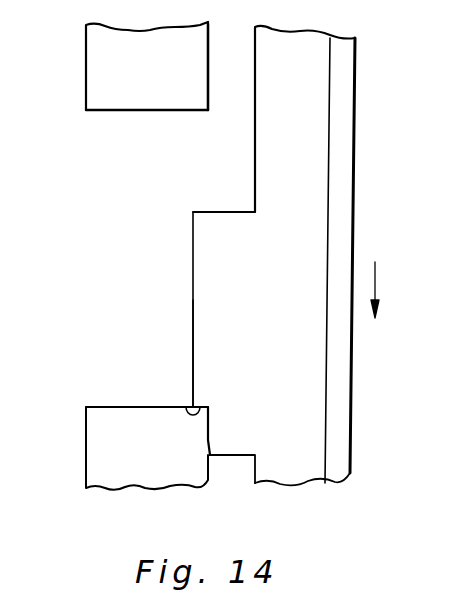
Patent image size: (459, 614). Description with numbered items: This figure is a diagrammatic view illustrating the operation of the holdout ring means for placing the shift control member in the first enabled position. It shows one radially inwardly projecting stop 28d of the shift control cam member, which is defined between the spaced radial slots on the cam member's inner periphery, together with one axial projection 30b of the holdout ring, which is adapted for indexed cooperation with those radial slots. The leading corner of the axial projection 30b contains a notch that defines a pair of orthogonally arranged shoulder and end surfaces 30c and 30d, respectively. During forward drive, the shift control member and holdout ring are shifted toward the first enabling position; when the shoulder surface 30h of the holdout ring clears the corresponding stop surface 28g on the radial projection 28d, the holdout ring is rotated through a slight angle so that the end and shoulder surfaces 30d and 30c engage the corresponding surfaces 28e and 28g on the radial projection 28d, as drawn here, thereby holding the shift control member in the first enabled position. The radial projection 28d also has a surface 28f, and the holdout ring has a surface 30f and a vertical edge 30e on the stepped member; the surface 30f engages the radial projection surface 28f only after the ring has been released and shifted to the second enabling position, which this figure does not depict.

The radially inwardly projecting stop 28d is at (98, 82).
The end surface of radial projection 28e is at (208, 82).
The radial projection surface 28f is at (186, 112).
The stop surface of radial projection 28g is at (112, 407).
The axial projection of holdout ring 30b is at (212, 271).
The shoulder surface of notch 30c is at (186, 406).
The end surface of notch 30d is at (207, 442).
The vertical edge of leg 30e is at (192, 350).
The holdout ring surface 30f is at (238, 197).
The shoulder surface of holdout ring 30h is at (238, 455).